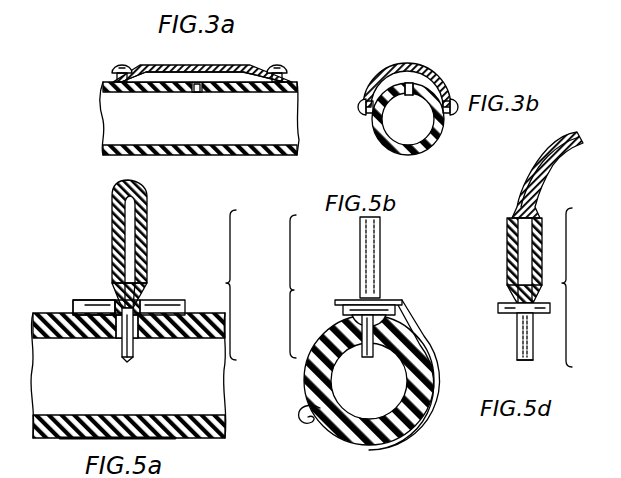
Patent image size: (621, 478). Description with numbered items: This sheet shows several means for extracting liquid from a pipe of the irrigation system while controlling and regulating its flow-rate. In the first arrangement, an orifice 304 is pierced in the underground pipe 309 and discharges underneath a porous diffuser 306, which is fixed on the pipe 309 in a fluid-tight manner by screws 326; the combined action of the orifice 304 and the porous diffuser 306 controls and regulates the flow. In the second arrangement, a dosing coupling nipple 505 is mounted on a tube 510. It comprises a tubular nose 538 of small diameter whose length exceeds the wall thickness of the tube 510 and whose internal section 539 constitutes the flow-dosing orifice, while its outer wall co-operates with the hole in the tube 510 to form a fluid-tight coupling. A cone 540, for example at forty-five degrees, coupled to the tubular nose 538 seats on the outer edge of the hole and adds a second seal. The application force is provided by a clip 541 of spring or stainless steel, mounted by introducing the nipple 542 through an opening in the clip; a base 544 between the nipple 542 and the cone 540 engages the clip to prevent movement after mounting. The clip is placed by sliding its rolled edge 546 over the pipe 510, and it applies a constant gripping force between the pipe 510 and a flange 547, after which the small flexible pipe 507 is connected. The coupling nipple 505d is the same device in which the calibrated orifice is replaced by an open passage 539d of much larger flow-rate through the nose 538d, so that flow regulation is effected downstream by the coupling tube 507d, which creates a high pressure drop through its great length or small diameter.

In FIG. 3A, the porous diffuser 306 is at (204, 65).
In FIG. 3B, the porous diffuser 306 is at (432, 74).
In FIG. 3A, the orifice 304 is at (200, 92).
In FIG. 3B, the orifice 304 is at (409, 94).
In FIG. 3A, the underground pipe 309 is at (162, 145).
In FIG. 3B, the underground pipe 309 is at (380, 140).
In FIG. 3A, the screws 326 is at (120, 65).
In FIG. 3B, the screws 326 is at (357, 109).
In FIG. 5A, the small flexible pipe 507 is at (132, 208).
In FIG. 5A, the flange 547 is at (156, 300).
In FIG. 5B, the flange 547 is at (338, 303).
In FIG. 5A, the clip 541 is at (175, 300).
In FIG. 5B, the clip 541 is at (410, 318).
In FIG. 5A, the base 544 is at (112, 299).
In FIG. 5B, the base 544 is at (384, 301).
In FIG. 5A, the cone 540 is at (112, 333).
In FIG. 5B, the cone 540 is at (352, 318).
In FIG. 5A, the tubular nose 538 is at (134, 348).
In FIG. 5B, the tubular nose 538 is at (376, 355).
In FIG. 5A, the internal section 539 is at (125, 360).
In FIG. 5A, the tube 510 is at (175, 420).
In FIG. 5B, the tube 510 is at (395, 418).
In FIG. 5A, the dosing coupling nipple 505 is at (246, 285).
In FIG. 5B, the dosing coupling nipple 505 is at (290, 290).
In FIG. 5B, the nipple 542 is at (375, 274).
In FIG. 5B, the rolled edge 546 is at (301, 426).
In FIG. 5D, the coupling tube 507d is at (559, 157).
In FIG. 5D, the coupling nipple 505d is at (563, 287).
In FIG. 5D, the nose 538d is at (518, 343).
In FIG. 5D, the open passage 539d is at (525, 361).